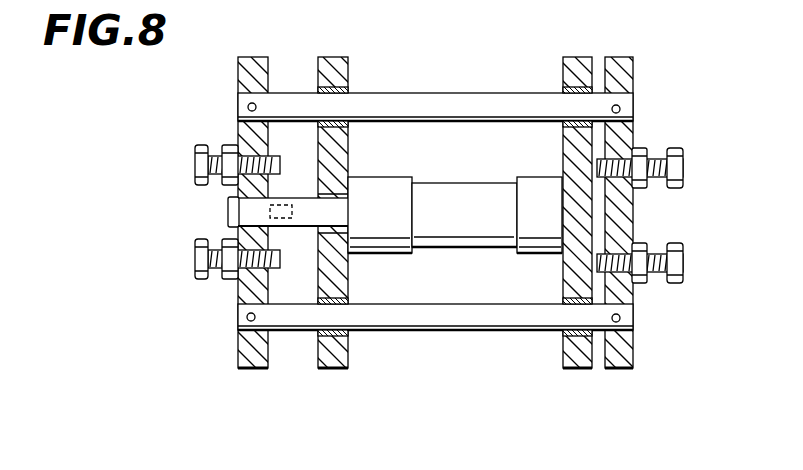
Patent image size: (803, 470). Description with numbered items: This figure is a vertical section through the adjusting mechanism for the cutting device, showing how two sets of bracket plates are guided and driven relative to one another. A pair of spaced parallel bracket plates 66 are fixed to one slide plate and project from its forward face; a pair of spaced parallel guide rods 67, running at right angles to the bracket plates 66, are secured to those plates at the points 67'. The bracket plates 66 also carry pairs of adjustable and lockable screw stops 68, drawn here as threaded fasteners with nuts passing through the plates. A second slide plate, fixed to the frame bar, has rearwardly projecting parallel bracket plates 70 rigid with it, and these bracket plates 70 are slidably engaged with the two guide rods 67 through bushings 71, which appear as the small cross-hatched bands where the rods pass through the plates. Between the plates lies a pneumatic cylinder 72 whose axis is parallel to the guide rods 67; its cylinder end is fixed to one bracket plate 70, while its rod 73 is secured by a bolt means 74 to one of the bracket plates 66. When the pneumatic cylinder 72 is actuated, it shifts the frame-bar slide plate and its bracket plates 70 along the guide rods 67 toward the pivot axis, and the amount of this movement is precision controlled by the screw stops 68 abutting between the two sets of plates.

The bracket plates 66 is at (238, 352).
The guide rods 67 is at (435, 220).
The securing points of guide rods 67' is at (442, 220).
The screw stops 68 is at (195, 168).
The bracket plates 70 is at (340, 355).
The bushings 71 is at (348, 74).
The pneumatic cylinder 72 is at (462, 230).
The rod 73 is at (308, 200).
The bolt means 74 is at (228, 212).